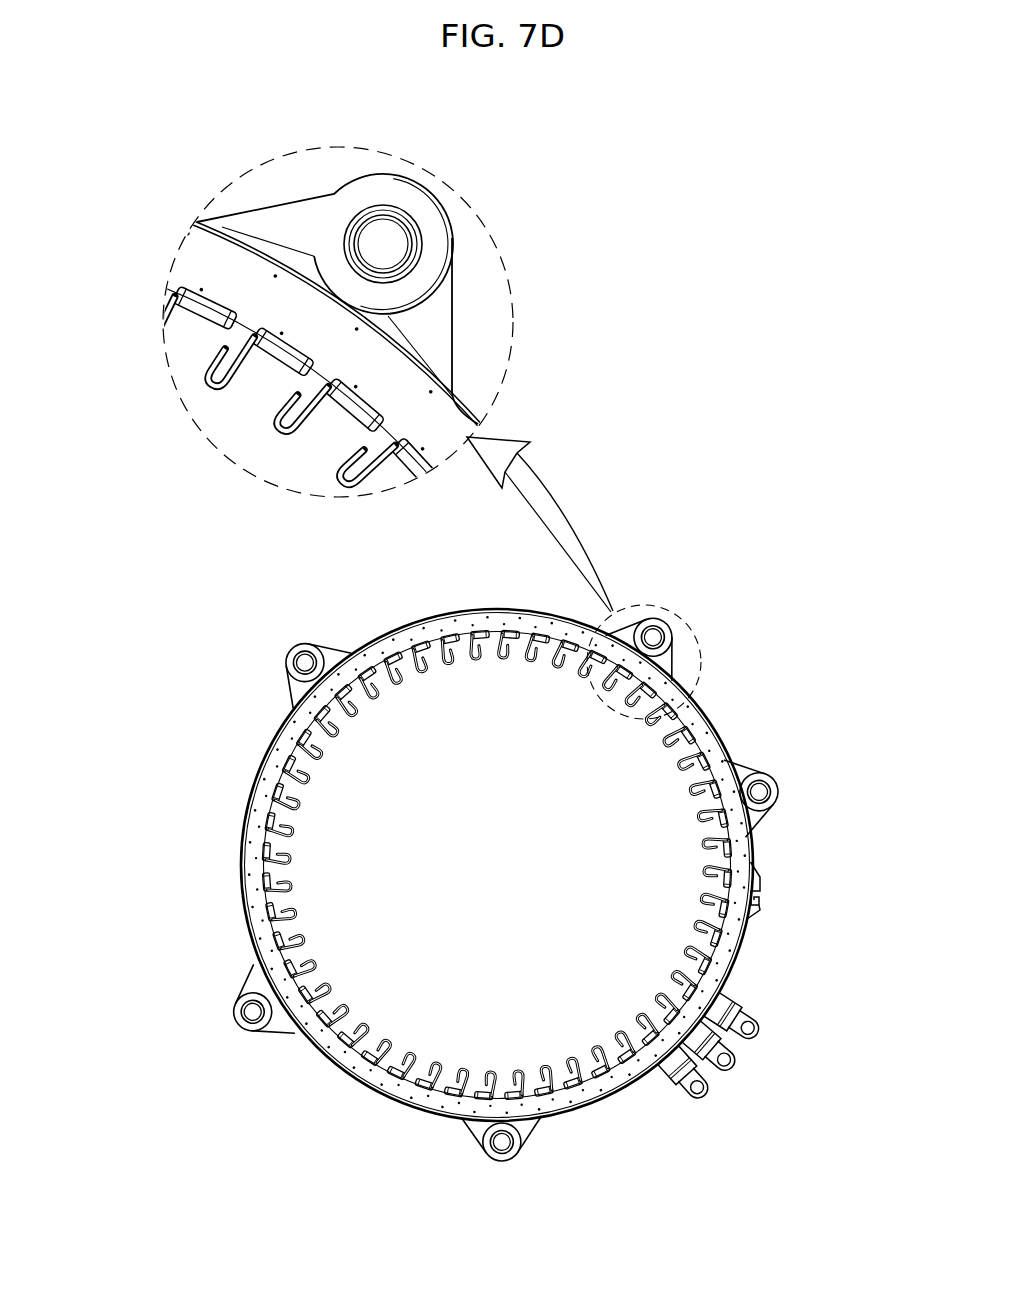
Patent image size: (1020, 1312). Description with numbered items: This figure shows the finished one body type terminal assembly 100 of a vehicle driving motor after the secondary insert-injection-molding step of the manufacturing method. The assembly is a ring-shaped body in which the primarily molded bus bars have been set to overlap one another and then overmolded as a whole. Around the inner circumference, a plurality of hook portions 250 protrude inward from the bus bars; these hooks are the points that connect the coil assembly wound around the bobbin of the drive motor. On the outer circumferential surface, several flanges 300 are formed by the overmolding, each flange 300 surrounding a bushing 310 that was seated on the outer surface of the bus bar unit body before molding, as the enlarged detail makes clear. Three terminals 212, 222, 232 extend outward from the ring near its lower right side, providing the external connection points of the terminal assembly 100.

The terminal assembly 100 is at (748, 563).
The first terminal 212 is at (731, 1006).
The second terminal 222 is at (737, 1070).
The third terminal 232 is at (668, 1078).
The hook portion 250 is at (217, 373).
The flange 300 is at (390, 281).
The bushing 310 is at (404, 226).